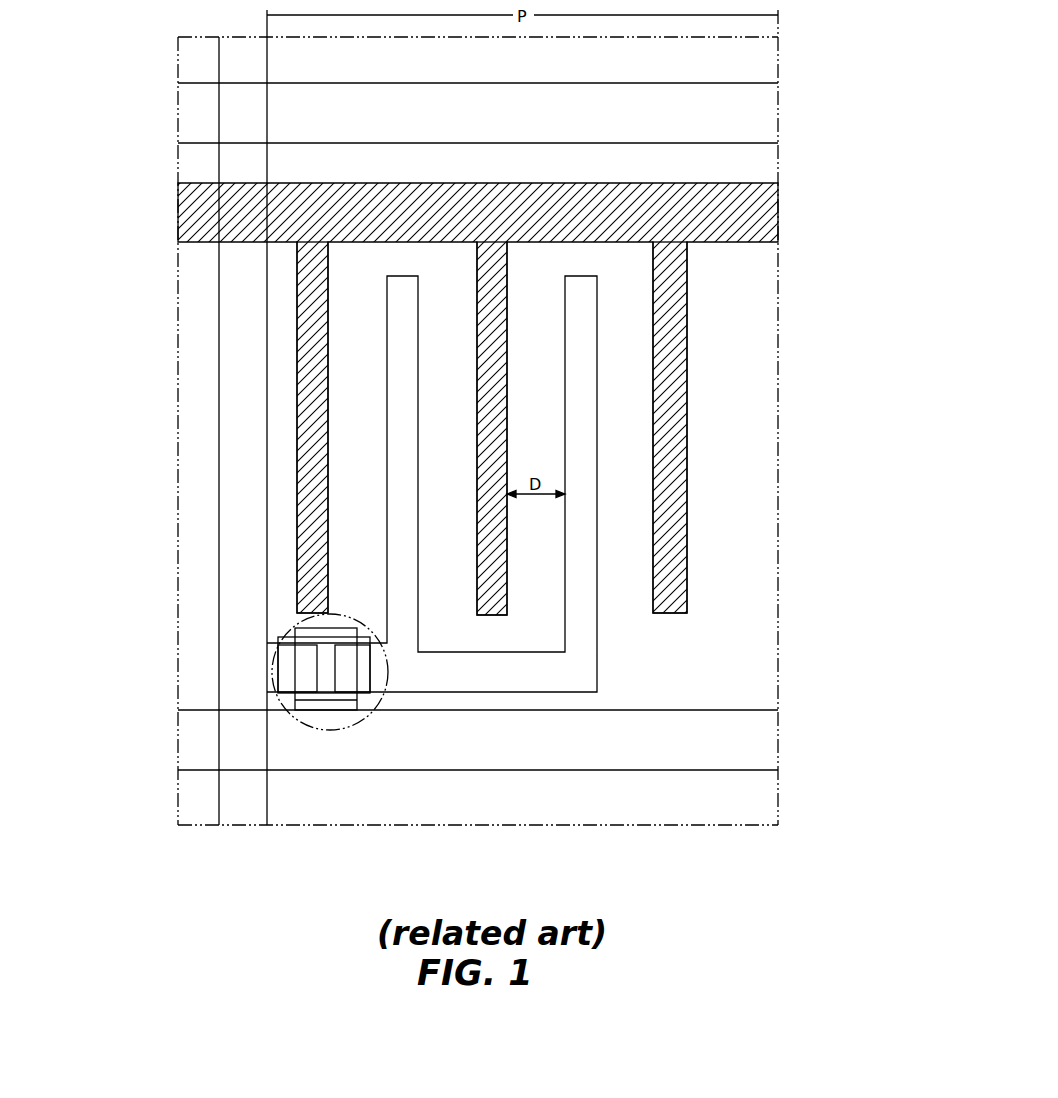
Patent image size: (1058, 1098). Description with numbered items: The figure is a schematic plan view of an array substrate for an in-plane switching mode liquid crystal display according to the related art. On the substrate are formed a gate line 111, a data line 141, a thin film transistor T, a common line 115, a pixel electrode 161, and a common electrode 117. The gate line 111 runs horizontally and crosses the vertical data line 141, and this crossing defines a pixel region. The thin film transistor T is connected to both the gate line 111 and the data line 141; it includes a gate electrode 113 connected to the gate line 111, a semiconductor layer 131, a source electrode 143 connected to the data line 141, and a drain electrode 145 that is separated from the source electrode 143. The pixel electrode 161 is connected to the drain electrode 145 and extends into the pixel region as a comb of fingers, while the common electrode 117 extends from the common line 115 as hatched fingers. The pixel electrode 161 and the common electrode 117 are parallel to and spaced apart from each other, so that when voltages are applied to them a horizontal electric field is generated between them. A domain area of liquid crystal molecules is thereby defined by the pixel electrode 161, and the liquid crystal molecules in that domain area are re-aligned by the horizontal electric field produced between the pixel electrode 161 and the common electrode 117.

The gate line 111 is at (765, 109).
The gate electrode 113 is at (350, 627).
The common line 115 is at (770, 204).
The common electrode 117 is at (507, 312).
The semiconductor layer 131 is at (330, 700).
The data line 141 is at (236, 812).
The source electrode 143 is at (292, 708).
The drain electrode 145 is at (362, 708).
The pixel electrode 161 is at (386, 305).
The thin film transistor T is at (270, 665).